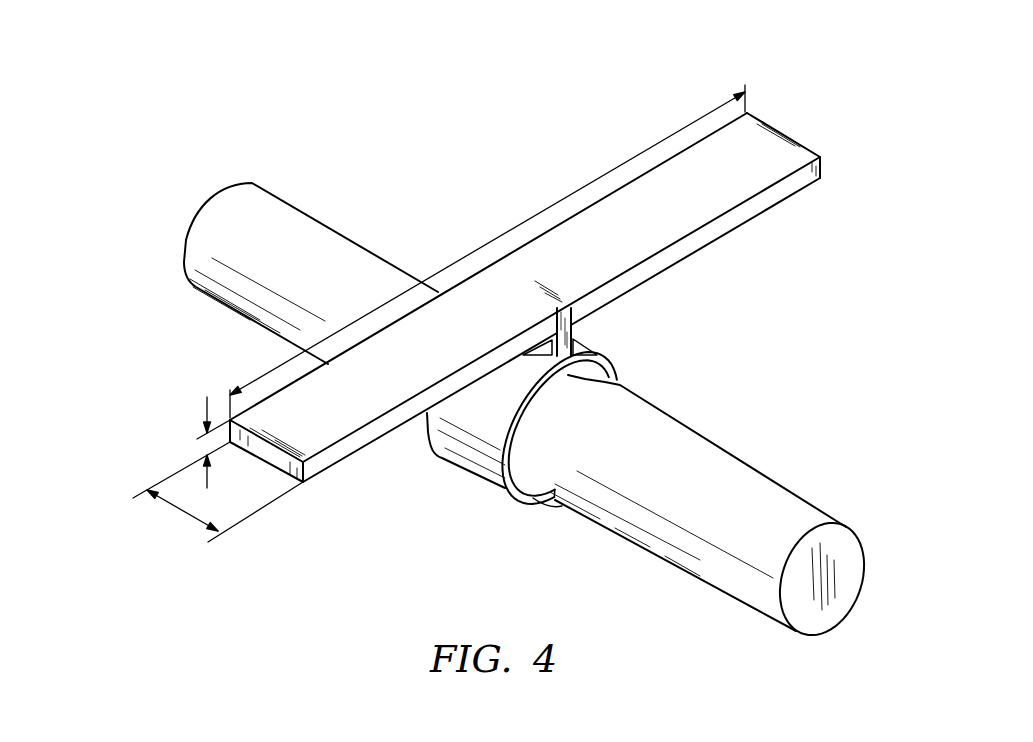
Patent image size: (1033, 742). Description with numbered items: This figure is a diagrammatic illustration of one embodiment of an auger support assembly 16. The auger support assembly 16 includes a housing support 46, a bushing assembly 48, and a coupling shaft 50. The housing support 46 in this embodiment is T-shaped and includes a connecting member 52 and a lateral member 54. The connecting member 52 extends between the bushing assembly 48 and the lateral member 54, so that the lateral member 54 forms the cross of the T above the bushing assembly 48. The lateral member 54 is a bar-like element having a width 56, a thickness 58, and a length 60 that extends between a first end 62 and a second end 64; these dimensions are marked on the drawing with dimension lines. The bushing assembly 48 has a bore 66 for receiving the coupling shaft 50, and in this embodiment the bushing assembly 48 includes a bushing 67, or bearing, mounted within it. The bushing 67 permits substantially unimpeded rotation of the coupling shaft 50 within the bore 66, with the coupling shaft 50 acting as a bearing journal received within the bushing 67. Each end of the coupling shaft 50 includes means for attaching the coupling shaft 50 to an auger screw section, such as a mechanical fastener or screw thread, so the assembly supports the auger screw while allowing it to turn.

The auger support assembly 16 is at (814, 339).
The housing support 46 is at (463, 233).
The bushing assembly 48 is at (478, 497).
The coupling shaft 50 is at (782, 484).
The connecting member 52 is at (572, 330).
The lateral member 54 is at (740, 212).
The width 56 is at (178, 512).
The thickness 58 is at (207, 412).
The length 60 is at (508, 231).
The first end 62 is at (278, 462).
The second end 64 is at (786, 134).
The bore 66 is at (614, 378).
The bushing 67 is at (529, 492).